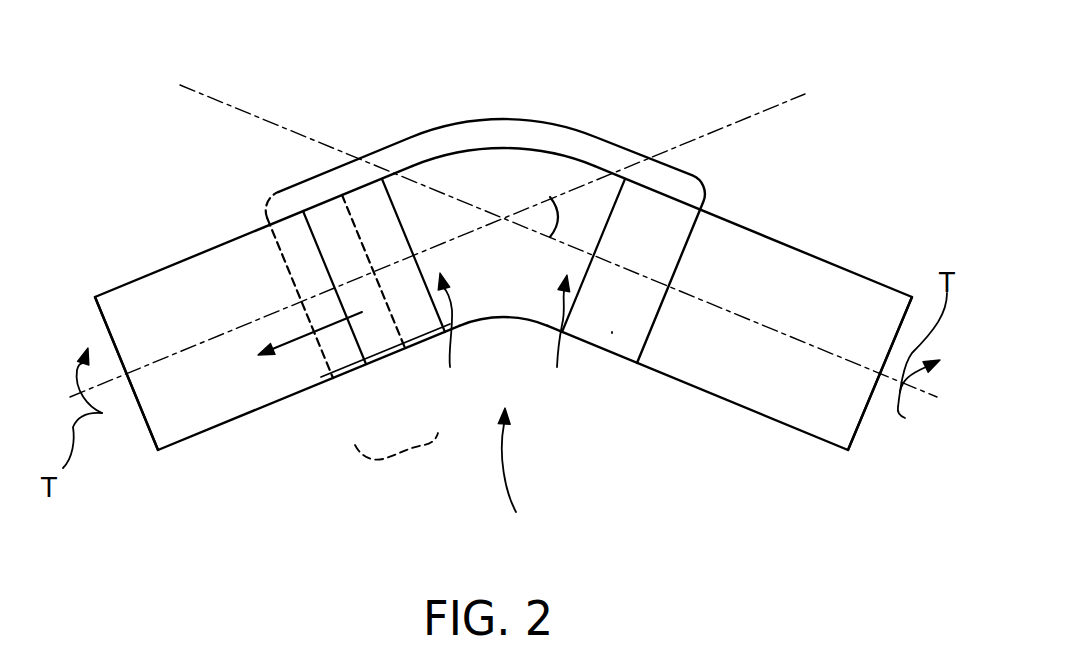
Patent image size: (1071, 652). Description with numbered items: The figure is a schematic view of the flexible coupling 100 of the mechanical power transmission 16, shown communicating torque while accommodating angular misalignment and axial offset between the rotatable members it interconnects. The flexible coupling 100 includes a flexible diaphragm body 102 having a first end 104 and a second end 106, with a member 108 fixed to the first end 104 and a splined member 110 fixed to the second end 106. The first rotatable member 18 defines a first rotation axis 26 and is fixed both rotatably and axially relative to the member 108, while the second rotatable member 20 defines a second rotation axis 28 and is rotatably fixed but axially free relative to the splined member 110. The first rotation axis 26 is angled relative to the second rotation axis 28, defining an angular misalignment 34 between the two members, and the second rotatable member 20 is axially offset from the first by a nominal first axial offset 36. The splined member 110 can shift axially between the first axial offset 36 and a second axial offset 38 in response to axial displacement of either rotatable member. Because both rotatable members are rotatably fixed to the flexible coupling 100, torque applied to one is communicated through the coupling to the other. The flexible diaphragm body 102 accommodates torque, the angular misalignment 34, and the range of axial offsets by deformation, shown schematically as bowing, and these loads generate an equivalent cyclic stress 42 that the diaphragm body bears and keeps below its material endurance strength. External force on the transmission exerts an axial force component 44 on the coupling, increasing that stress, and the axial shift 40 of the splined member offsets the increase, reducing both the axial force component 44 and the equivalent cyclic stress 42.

The mechanical power transmission 16 is at (514, 475).
The first rotatable member 18 is at (836, 279).
The second rotatable member 20 is at (170, 278).
The first rotation axis 26 is at (850, 363).
The second rotation axis 28 is at (157, 363).
The angular misalignment 34 is at (558, 217).
The first axial offset 36 is at (317, 221).
The second axial offset 38 is at (268, 254).
The axial shift 40 is at (330, 386).
The equivalent cyclic stress 42 is at (550, 167).
The axial force component 44 is at (329, 377).
The flexible coupling 100 is at (531, 119).
The flexible diaphragm body 102 is at (484, 273).
The first end 104 is at (557, 335).
The second end 106 is at (450, 335).
The member 108 is at (612, 332).
The splined member 110 is at (482, 385).